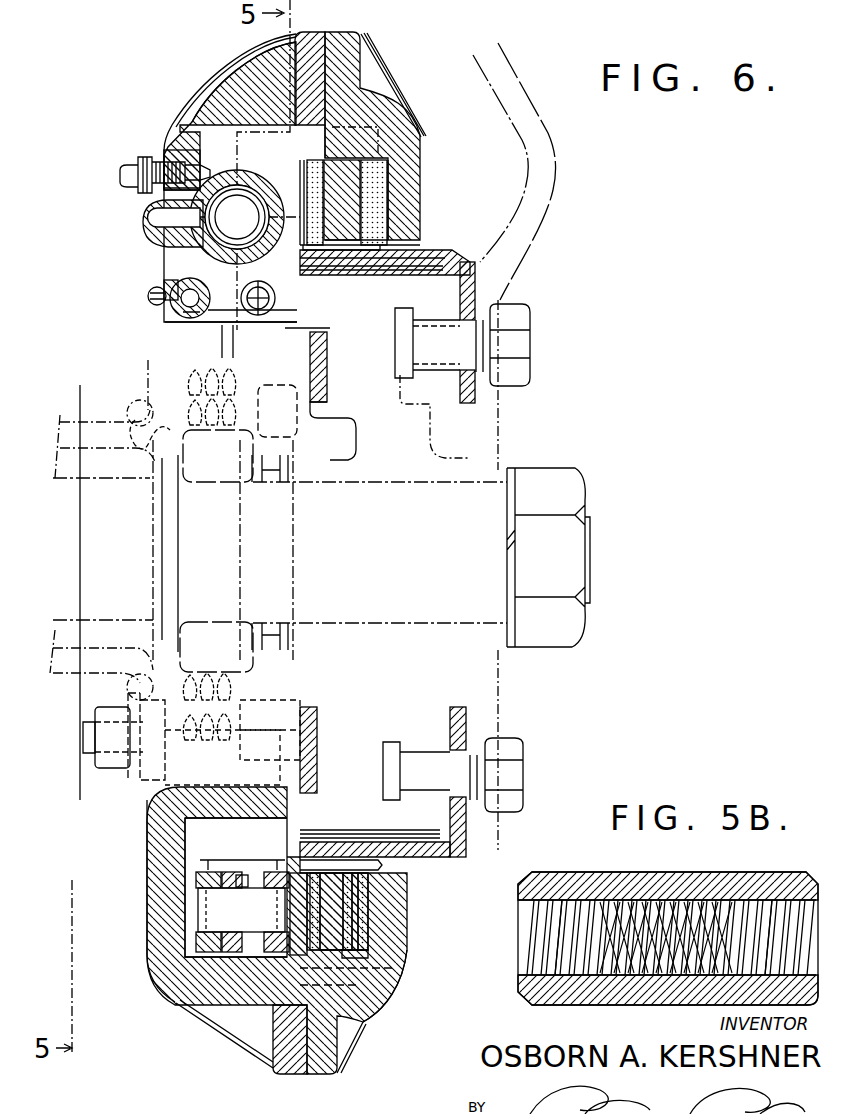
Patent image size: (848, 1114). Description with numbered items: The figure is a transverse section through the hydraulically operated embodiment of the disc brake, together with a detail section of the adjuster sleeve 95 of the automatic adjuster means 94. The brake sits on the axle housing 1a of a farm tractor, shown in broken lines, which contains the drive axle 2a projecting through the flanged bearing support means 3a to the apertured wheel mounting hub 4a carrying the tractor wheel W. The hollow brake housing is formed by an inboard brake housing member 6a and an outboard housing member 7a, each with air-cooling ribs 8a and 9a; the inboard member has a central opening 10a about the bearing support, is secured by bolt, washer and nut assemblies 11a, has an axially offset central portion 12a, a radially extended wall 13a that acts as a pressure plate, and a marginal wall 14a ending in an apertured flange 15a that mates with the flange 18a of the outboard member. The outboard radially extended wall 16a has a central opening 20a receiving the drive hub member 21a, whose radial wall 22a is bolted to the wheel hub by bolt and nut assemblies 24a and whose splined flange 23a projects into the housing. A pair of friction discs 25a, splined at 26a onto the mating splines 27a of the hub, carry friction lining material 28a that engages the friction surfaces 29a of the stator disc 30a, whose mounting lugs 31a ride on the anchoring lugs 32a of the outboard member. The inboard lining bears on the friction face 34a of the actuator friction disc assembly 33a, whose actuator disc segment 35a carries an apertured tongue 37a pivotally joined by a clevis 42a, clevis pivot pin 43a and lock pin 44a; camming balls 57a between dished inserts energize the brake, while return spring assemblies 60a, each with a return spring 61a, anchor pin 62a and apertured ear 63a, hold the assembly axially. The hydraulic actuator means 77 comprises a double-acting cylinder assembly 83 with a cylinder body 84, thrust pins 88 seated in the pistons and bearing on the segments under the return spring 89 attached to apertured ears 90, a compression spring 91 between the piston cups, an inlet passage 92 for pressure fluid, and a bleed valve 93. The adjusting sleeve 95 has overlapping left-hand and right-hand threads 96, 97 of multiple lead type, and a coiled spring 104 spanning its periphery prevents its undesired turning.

In FIG. 6, the axle housing 1a is at (73, 422).
In FIG. 6, the drive axle 2a is at (321, 592).
In FIG. 6, the bearing support means 3a is at (192, 349).
In FIG. 6, the wheel mounting hub 4a is at (405, 400).
In FIG. 6, the inboard brake housing member 6a is at (182, 120).
In FIG. 6, the outboard housing member 7a is at (385, 998).
In FIG. 6, the air-cooling ribs 8a is at (262, 56).
In FIG. 6, the air-cooling ribs 9a is at (372, 58).
In FIG. 6, the central opening 10a is at (328, 398).
In FIG. 6, the bolt, washer and nut assemblies 11a is at (95, 760).
In FIG. 6, the central portion 12a is at (325, 336).
In FIG. 6, the radially extended wall 13a is at (165, 278).
In FIG. 6, the marginal wall 14a is at (253, 100).
In FIG. 6, the apertured flange 15a is at (307, 34).
In FIG. 6, the radially extended wall 16a is at (400, 184).
In FIG. 6, the apertured flange 18a is at (345, 36).
In FIG. 6, the central opening 20a is at (395, 238).
In FIG. 6, the drive hub member 21a is at (478, 262).
In FIG. 6, the radially disposed wall 22a is at (480, 290).
In FIG. 6, the splined flange 23a is at (448, 272).
In FIG. 6, the bolt and nut assemblies 24a is at (535, 318).
In FIG. 6, the friction discs 25a is at (318, 175).
In FIG. 6, the splines 26a is at (352, 262).
In FIG. 6, the mating splines 27a is at (400, 249).
In FIG. 6, the friction lining material 28a is at (380, 203).
In FIG. 6, the friction surfaces 29a is at (340, 900).
In FIG. 6, the stator disc 30a is at (335, 936).
In FIG. 6, the mounting lugs 31a is at (395, 968).
In FIG. 6, the anchoring lugs 32a is at (306, 960).
In FIG. 6, the actuator friction disc assembly 33a is at (183, 886).
In FIG. 6, the friction face 34a is at (340, 840).
In FIG. 6, the actuator disc segment 35a is at (288, 316).
In FIG. 6, the apertured tongue 37a is at (225, 955).
In FIG. 6, the clevis 42a is at (264, 868).
In FIG. 6, the clevis pivot pin 43a is at (241, 910).
In FIG. 6, the lock pin 44a is at (243, 948).
In FIG. 6, the camming ball 57a is at (174, 787).
In FIG. 6, the return spring assemblies 60a is at (131, 402).
In FIG. 6, the return spring 61a is at (225, 438).
In FIG. 6, the anchor pin 62a is at (155, 448).
In FIG. 6, the apertured ear 63a is at (245, 412).
In FIG. 6, the hydraulic actuator means 77 is at (133, 236).
In FIG. 6, the double-acting cylinder assembly 83 is at (278, 180).
In FIG. 6, the cylinder body 84 is at (270, 200).
In FIG. 6, the thrust pin 88 is at (266, 170).
In FIG. 6, the return spring 89 is at (245, 312).
In FIG. 6, the apertured ear 90 is at (262, 314).
In FIG. 6, the compression spring 91 is at (163, 193).
In FIG. 6, the inlet passage 92 is at (160, 216).
In FIG. 6, the bleed valve 93 is at (150, 160).
In FIG. 6, the automatic adjuster means 94 is at (168, 308).
In FIG. 6, the adjusting sleeve 95 is at (185, 312).
In FIG. 5B, the adjusting sleeve 95 is at (659, 866).
In FIG. 5B, the left-hand thread 96 is at (566, 900).
In FIG. 5B, the right-hand thread 97 is at (770, 900).
In FIG. 6, the coiled spring 104 is at (150, 292).
In FIG. 6, the tractor wheel W is at (545, 172).